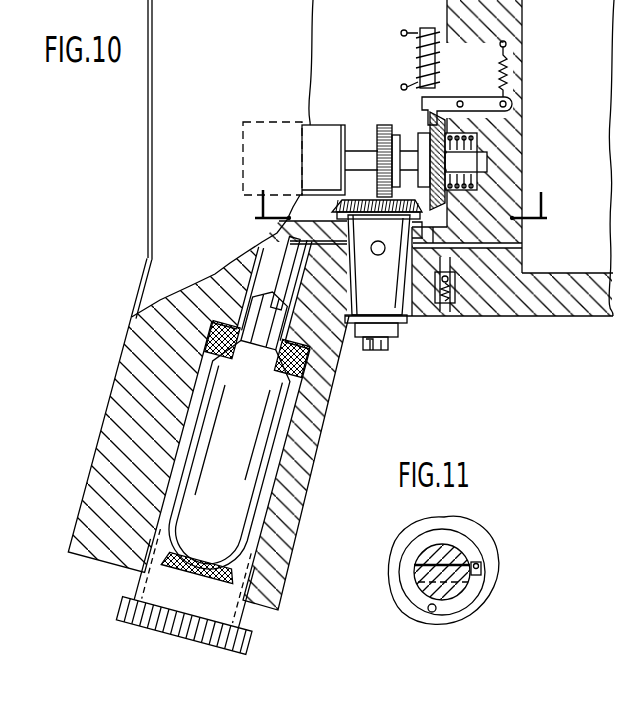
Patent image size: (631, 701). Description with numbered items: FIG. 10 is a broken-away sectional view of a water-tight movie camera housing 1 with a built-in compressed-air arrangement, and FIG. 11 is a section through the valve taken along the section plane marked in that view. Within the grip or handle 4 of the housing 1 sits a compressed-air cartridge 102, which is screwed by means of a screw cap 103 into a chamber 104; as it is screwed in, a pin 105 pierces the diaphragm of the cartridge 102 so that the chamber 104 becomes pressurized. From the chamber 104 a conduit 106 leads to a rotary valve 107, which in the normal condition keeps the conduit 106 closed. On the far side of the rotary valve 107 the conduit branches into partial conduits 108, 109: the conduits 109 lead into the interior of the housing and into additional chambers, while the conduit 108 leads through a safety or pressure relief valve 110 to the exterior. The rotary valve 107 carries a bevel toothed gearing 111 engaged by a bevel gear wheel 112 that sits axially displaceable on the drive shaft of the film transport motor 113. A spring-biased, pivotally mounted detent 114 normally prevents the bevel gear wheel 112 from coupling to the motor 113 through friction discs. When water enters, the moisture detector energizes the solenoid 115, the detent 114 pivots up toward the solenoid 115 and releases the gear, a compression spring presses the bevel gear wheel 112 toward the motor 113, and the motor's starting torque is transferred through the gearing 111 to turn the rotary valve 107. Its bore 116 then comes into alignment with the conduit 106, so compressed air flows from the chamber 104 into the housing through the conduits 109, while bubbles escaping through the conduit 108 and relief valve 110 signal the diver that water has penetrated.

In FIG. 10, the housing 1 is at (193, 48).
In FIG. 10, the grip or handle 4 is at (116, 356).
In FIG. 10, the compressed-air cartridge 102 is at (235, 483).
In FIG. 10, the screw cap 103 is at (163, 586).
In FIG. 10, the chamber 104 is at (250, 290).
In FIG. 10, the pin 105 is at (284, 280).
In FIG. 10, the conduit 106 is at (257, 219).
In FIG. 10, the rotary valve 107 is at (385, 303).
In FIG. 11, the rotary valve 107 is at (457, 592).
In FIG. 10, the partial conduit 108 is at (417, 257).
In FIG. 10, the partial conduits 109 is at (490, 248).
In FIG. 10, the safety or pressure relief valve 110 is at (451, 303).
In FIG. 10, the bevel toothed gearing 111 is at (335, 208).
In FIG. 10, the bevel gear wheel 112 is at (433, 130).
In FIG. 10, the film transport motor 113 is at (334, 161).
In FIG. 10, the detent 114 is at (421, 103).
In FIG. 10, the solenoid 115 is at (418, 52).
In FIG. 10, the bore 116 is at (378, 256).
In FIG. 11, the bore 116 is at (425, 587).